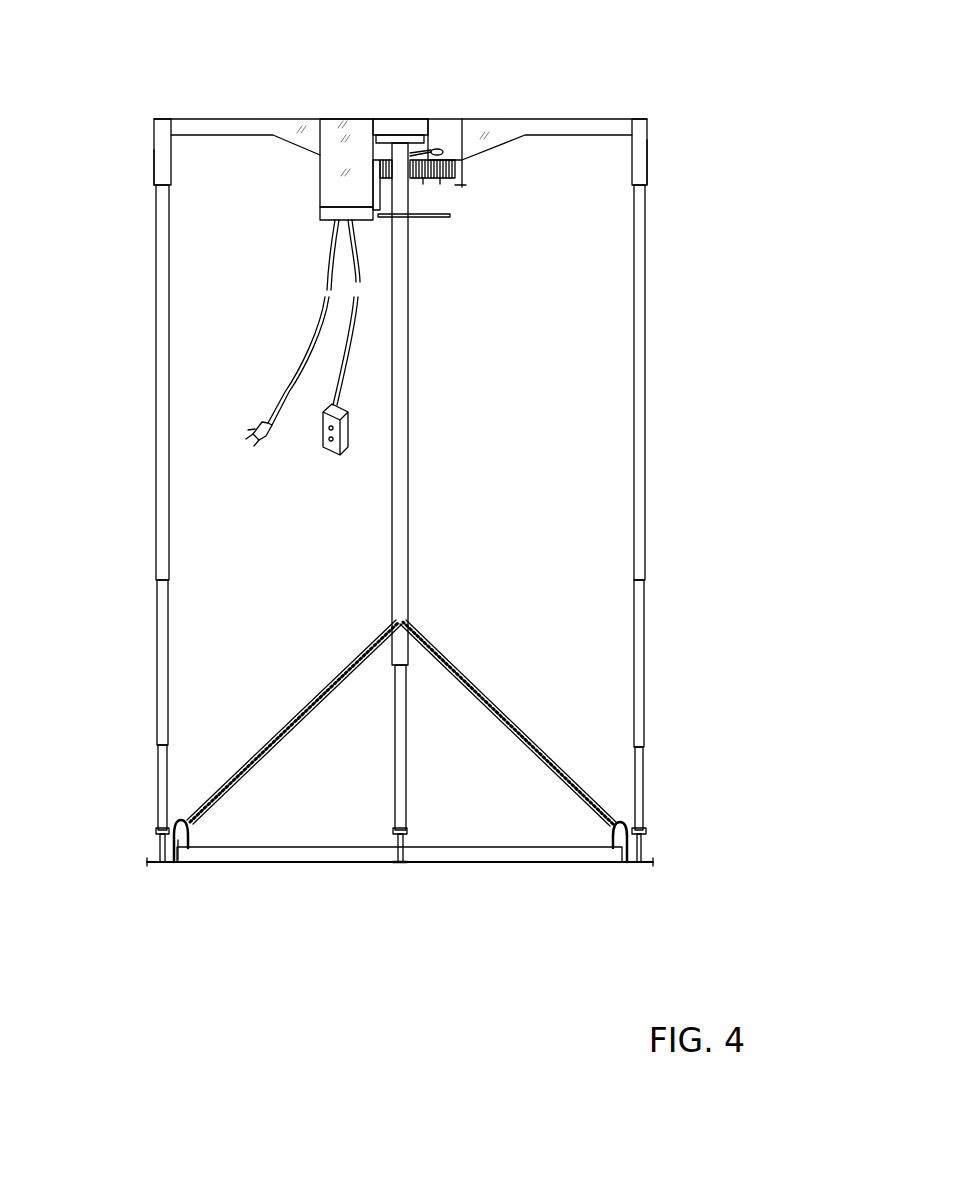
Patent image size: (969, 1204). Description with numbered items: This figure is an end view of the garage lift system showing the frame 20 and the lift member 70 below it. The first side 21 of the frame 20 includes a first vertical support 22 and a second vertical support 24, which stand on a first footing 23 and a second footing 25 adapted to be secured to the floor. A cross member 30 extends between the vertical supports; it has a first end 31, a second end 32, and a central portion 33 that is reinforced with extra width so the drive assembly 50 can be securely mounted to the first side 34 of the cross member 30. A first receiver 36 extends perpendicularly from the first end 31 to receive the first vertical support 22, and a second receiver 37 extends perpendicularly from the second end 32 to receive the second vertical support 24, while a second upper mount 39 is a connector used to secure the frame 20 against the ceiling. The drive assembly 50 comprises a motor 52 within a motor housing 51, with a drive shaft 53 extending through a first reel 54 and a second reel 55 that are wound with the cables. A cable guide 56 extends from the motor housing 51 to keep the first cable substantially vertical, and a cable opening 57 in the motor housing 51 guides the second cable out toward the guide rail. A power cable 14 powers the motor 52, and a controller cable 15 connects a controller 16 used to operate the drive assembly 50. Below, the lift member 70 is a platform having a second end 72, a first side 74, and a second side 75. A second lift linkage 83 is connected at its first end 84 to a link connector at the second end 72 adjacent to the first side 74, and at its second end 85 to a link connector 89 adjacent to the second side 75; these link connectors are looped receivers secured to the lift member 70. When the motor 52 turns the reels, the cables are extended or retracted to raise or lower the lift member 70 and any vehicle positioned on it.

The power cable 14 is at (283, 390).
The controller cable 15 is at (337, 367).
The controller 16 is at (327, 453).
The frame 20 is at (396, 478).
The first side 21 is at (518, 125).
The first vertical support 22 is at (676, 458).
The first footing 23 is at (650, 862).
The second vertical support 24 is at (118, 463).
The second footing 25 is at (150, 862).
The cross member 30 is at (252, 119).
The first end 31 is at (622, 118).
The second end 32 is at (173, 119).
The central portion 33 is at (313, 143).
The first side 34 is at (578, 126).
The first receiver 36 is at (648, 145).
The second receiver 37 is at (153, 155).
The second upper mount 39 is at (397, 125).
The drive assembly 50 is at (384, 149).
The motor housing 51 is at (333, 165).
The motor 52 is at (393, 198).
The drive shaft 53 is at (343, 197).
The first reel 54 is at (380, 188).
The second reel 55 is at (440, 183).
The cable guide 56 is at (438, 217).
The cable opening 57 is at (437, 148).
The lift member 70 is at (332, 863).
The second end 72 is at (442, 855).
The first side 74 is at (641, 860).
The second side 75 is at (160, 848).
The second lift linkage 83 is at (492, 698).
The first end 84 is at (613, 833).
The second end 85 is at (186, 818).
The link connector 89 is at (195, 833).